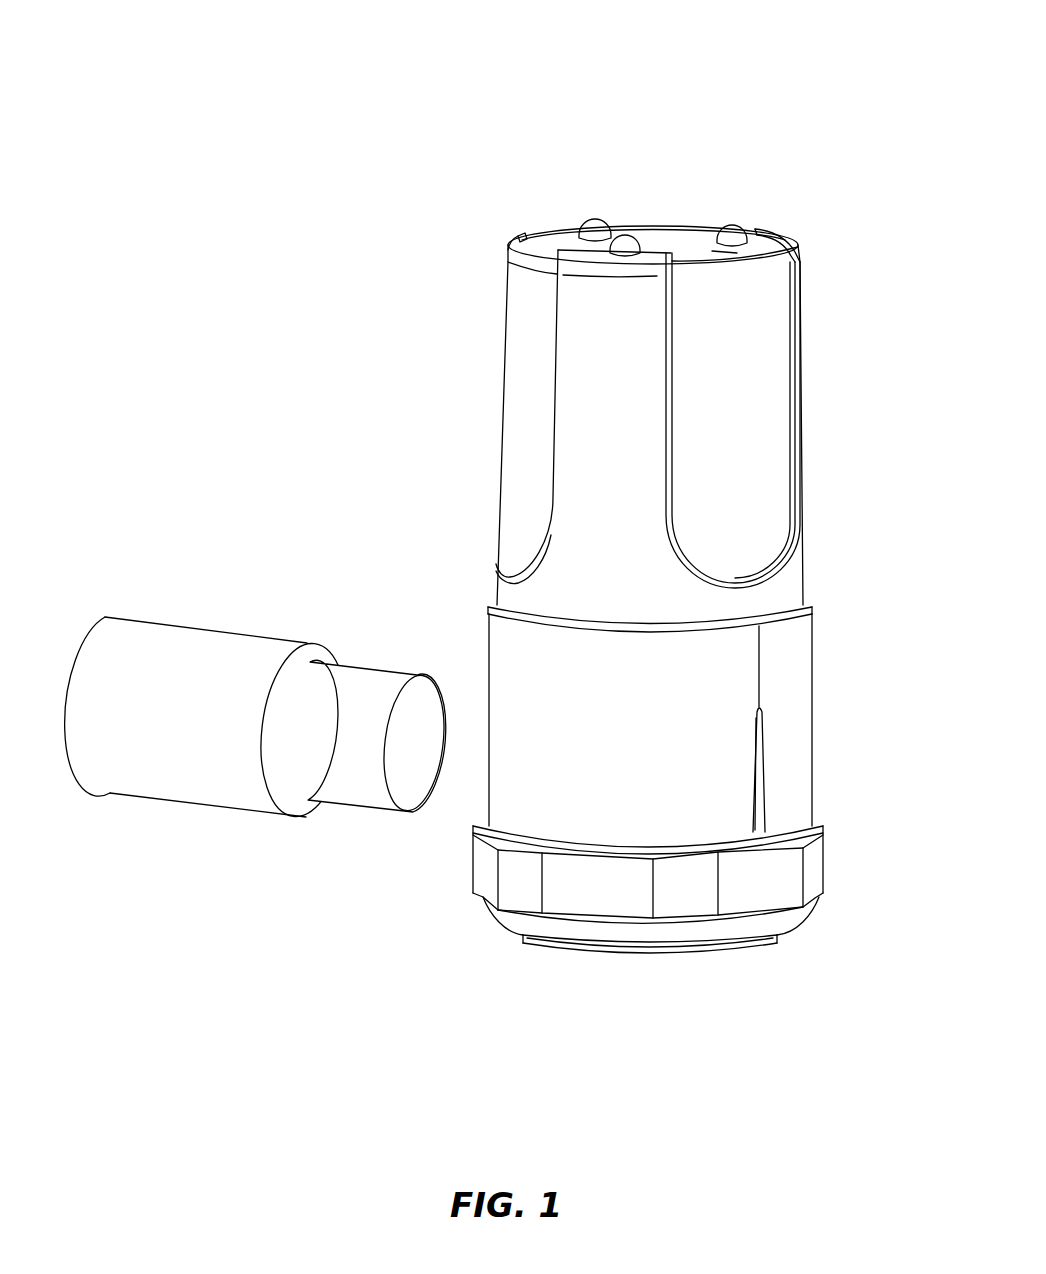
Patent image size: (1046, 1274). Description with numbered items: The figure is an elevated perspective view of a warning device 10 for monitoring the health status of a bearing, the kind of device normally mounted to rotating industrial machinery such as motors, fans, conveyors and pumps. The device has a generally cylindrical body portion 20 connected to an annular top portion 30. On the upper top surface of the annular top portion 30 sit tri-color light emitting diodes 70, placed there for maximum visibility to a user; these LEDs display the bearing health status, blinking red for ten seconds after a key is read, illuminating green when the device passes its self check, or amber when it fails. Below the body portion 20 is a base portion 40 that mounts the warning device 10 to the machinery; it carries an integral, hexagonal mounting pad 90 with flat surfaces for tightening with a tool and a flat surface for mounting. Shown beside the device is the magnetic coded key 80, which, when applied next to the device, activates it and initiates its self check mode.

The warning device 10 is at (844, 114).
The body portion 20 is at (695, 529).
The annular top portion 30 is at (690, 240).
The base portion 40 is at (694, 880).
The tri-color light emitting diode 70 is at (624, 234).
The magnetic coded key 80 is at (205, 852).
The mounting pad 90 is at (646, 955).